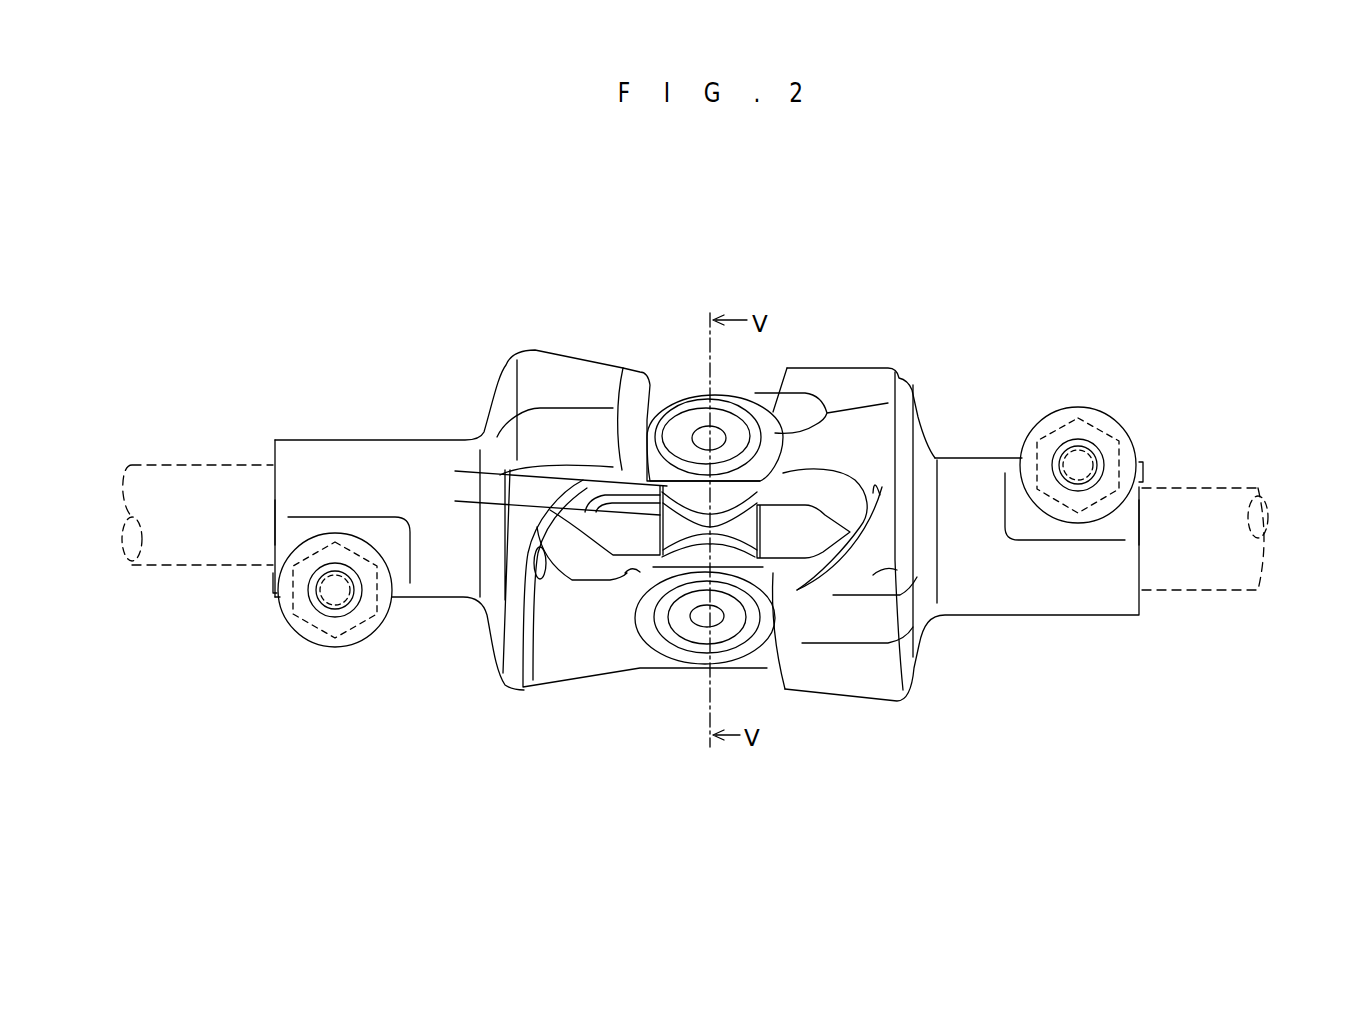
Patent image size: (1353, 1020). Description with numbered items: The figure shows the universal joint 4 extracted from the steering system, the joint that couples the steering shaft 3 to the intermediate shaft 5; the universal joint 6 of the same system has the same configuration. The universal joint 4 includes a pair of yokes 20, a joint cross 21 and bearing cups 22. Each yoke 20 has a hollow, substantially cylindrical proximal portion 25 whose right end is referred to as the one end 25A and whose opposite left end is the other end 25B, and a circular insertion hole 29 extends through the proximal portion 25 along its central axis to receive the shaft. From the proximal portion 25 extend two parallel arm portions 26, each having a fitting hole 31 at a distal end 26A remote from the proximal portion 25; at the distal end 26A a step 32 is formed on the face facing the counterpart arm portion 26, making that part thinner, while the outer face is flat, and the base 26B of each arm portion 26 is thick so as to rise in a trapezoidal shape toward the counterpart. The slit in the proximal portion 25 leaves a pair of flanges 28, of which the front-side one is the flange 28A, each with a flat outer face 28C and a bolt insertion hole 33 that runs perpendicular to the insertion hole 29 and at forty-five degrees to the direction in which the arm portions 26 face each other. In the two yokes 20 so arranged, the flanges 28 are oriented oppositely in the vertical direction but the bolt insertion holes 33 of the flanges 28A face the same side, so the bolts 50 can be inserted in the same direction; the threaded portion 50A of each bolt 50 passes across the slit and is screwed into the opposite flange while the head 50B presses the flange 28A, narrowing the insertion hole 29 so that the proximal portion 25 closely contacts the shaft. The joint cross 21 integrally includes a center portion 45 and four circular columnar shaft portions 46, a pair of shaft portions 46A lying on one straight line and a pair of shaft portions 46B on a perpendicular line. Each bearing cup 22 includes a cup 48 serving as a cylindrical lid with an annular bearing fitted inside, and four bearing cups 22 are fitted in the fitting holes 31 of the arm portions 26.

The steering shaft 3 is at (1213, 483).
The universal joint 4 is at (946, 313).
The universal joint 6 is at (930, 350).
The intermediate shaft 5 is at (157, 462).
The yoke 20 is at (407, 438).
The joint cross 21 is at (740, 529).
The bearing cup 22 is at (739, 414).
The proximal portion 25 is at (333, 455).
The one end 25A is at (273, 488).
The other end 25B is at (475, 463).
The arm portion 26 is at (598, 385).
The distal end 26A is at (783, 380).
The base 26B is at (537, 378).
The flange 28 is at (753, 519).
The flange 28A is at (345, 625).
The face 28C is at (290, 598).
The insertion hole 29 is at (264, 528).
The fitting hole 31 is at (673, 420).
The step 32 is at (792, 470).
The bolt insertion hole 33 is at (347, 601).
The center portion 45 is at (677, 533).
The shaft portion 46 is at (390, 462).
The shaft portion 46A is at (529, 502).
The shaft portion 46B is at (533, 470).
The cup 48 is at (657, 437).
The bolt 50 is at (230, 738).
The threaded portion 50A is at (300, 640).
The head 50B is at (330, 640).